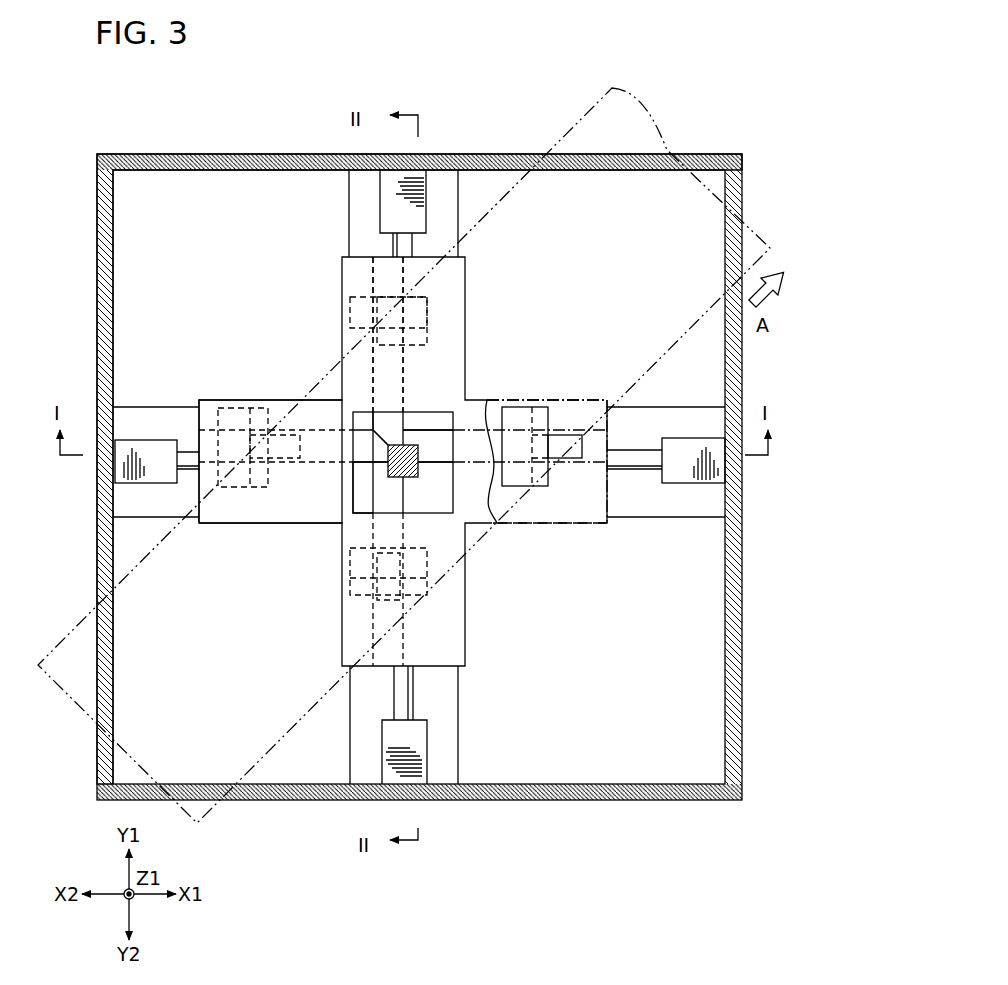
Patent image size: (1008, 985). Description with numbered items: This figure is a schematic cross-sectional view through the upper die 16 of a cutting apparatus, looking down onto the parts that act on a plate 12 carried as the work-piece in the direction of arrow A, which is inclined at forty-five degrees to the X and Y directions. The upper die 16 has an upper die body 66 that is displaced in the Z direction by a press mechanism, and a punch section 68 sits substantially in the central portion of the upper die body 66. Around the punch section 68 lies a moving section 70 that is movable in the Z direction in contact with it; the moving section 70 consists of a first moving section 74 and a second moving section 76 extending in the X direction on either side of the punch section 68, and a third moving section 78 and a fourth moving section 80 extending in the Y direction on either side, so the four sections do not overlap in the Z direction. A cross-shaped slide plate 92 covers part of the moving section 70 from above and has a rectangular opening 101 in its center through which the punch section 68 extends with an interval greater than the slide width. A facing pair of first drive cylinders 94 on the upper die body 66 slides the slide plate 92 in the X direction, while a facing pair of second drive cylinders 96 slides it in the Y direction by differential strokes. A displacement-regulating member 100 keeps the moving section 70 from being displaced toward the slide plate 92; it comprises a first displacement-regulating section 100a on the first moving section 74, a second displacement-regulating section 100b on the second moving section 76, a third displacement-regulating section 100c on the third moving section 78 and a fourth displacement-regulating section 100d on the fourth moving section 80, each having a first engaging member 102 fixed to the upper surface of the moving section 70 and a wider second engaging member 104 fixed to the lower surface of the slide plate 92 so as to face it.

The plate 12 is at (638, 104).
The upper die 16 is at (692, 151).
The upper die body 66 is at (195, 154).
The punch section 68 is at (418, 470).
The moving section 70 is at (365, 430).
The first moving section 74 is at (363, 450).
The second moving section 76 is at (432, 442).
The third moving section 78 is at (388, 497).
The fourth moving section 80 is at (386, 425).
The slide plate 92 is at (243, 408).
The first drive cylinders 94 is at (148, 445).
The second drive cylinders 96 is at (392, 218).
The displacement-regulating member 100 is at (613, 533).
The first displacement-regulating section 100a is at (243, 489).
The second displacement-regulating section 100b is at (550, 493).
The third displacement-regulating section 100c is at (446, 592).
The fourth displacement-regulating section 100d is at (437, 310).
The opening 101 is at (363, 490).
The first engaging member 102 is at (560, 438).
The second engaging member 104 is at (520, 415).